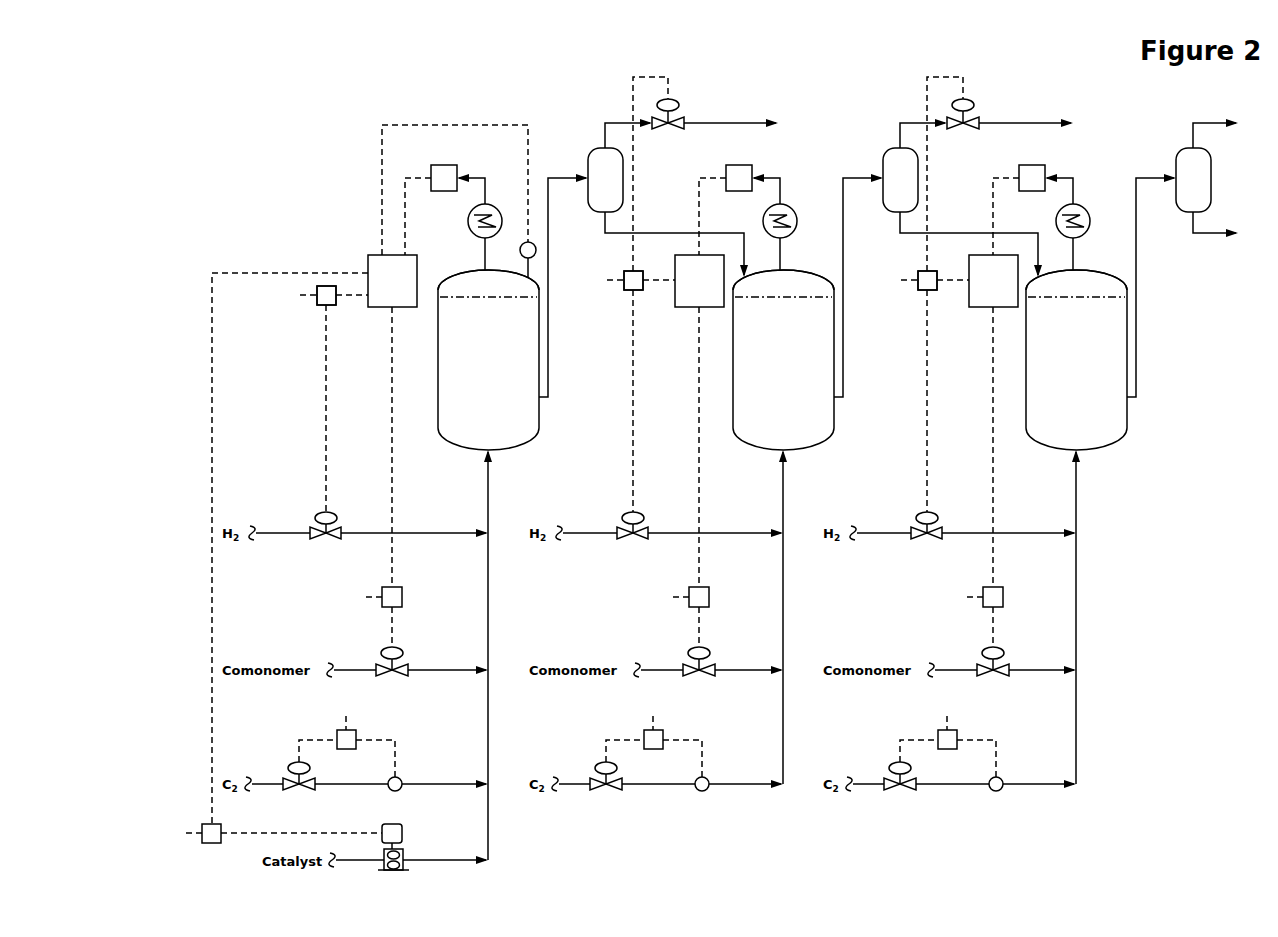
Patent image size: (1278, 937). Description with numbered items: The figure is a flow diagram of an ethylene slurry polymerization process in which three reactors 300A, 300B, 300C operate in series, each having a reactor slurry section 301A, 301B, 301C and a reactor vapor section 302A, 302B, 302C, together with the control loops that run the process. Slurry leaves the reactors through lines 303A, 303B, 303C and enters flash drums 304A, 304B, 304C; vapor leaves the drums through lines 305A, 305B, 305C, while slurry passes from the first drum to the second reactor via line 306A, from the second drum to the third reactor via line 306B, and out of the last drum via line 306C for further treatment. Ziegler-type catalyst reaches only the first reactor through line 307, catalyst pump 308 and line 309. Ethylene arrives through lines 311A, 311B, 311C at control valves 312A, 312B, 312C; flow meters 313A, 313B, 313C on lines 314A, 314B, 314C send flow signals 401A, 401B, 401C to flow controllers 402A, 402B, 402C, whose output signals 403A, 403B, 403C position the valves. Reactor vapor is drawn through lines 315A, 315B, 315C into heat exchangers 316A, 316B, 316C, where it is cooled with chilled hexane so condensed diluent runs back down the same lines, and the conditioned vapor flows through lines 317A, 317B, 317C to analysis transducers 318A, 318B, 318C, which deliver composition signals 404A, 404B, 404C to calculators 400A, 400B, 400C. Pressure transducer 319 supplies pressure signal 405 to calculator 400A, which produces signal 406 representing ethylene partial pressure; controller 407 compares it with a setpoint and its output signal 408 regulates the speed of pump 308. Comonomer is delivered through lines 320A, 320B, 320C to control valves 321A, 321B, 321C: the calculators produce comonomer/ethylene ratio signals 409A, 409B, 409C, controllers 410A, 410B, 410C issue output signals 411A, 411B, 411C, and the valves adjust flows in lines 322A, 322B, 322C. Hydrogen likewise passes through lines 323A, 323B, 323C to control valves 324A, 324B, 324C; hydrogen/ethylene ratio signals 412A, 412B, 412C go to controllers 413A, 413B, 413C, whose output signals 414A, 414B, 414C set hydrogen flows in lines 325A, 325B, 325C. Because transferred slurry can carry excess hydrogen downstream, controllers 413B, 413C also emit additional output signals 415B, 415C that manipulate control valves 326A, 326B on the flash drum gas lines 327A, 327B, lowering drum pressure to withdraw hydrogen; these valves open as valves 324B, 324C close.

The ethylene slurry polymerization reactor 300A is at (518, 447).
The ethylene slurry polymerization reactor 300B is at (813, 447).
The ethylene slurry polymerization reactor 300C is at (1106, 447).
The reactor slurry section 301A is at (488, 360).
The reactor slurry section 301B is at (783, 360).
The reactor slurry section 301C is at (1076, 360).
The reactor vapor section 302A is at (488, 283).
The reactor vapor section 302B is at (783, 283).
The reactor vapor section 302C is at (1076, 283).
The line 303A is at (563, 280).
The line 303B is at (858, 280).
The line 303C is at (1151, 280).
The flash drum 304A is at (605, 180).
The flash drum 304B is at (900, 180).
The flash drum 304C is at (1193, 180).
The line 305A is at (613, 133).
The line 305B is at (908, 133).
The line 305C is at (1215, 128).
The line 306A is at (676, 244).
The line 306B is at (971, 244).
The line 306C is at (1215, 231).
The line 307 is at (356, 866).
The catalyst pump 308 is at (393, 859).
The line 309 is at (445, 867).
The line 311A is at (266, 787).
The line 311B is at (572, 787).
The line 311C is at (866, 787).
The control valve 312A is at (301, 785).
The control valve 312B is at (608, 785).
The control valve 312C is at (902, 785).
The flow meter 313A is at (398, 777).
The flow meter 313B is at (705, 777).
The flow meter 313C is at (999, 777).
The line 314A is at (401, 789).
The line 314B is at (702, 789).
The line 314C is at (996, 789).
The line 315A is at (469, 254).
The line 315B is at (798, 254).
The line 315C is at (1090, 254).
The heat exchanger 316A is at (495, 217).
The heat exchanger 316B is at (795, 221).
The heat exchanger 316C is at (1088, 221).
The line 317A is at (480, 184).
The line 317B is at (783, 189).
The line 317C is at (1077, 189).
The analysis transducer 318A is at (446, 170).
The analysis transducer 318B is at (740, 170).
The analysis transducer 318C is at (1033, 170).
The pressure transducer 319 is at (516, 259).
The line 320A is at (351, 676).
The line 320B is at (658, 676).
The line 320C is at (952, 676).
The control valve 321A is at (393, 671).
The control valve 321B is at (699, 671).
The control valve 321C is at (993, 671).
The line 322A is at (448, 677).
The line 322B is at (749, 677).
The line 322C is at (1042, 677).
The line 323A is at (279, 538).
The line 323B is at (586, 538).
The line 323C is at (880, 538).
The control valve 324A is at (326, 535).
The control valve 324B is at (632, 535).
The control valve 324C is at (926, 535).
The line 325A is at (414, 540).
The line 325B is at (715, 540).
The line 325C is at (1009, 540).
The control valve 326A is at (668, 122).
The control valve 326B is at (963, 122).
The line 327A is at (731, 118).
The line 327B is at (1026, 118).
The calculator 400A is at (392, 281).
The calculator 400B is at (699, 281).
The calculator 400C is at (993, 281).
The flow signal 401A is at (377, 752).
The flow signal 401B is at (684, 752).
The flow signal 401C is at (978, 752).
The flow controller 402A is at (348, 735).
The flow controller 402B is at (654, 735).
The flow controller 402C is at (948, 735).
The output signal 403A is at (317, 744).
The output signal 403B is at (624, 744).
The output signal 403C is at (918, 744).
The signal 404A is at (422, 216).
The signal 404B is at (697, 216).
The signal 404C is at (990, 216).
The pressure signal 405 is at (455, 182).
The signal 406 is at (275, 548).
The controller 407 is at (194, 842).
The output signal 408 is at (301, 825).
The signal 409A is at (375, 447).
The signal 409B is at (682, 447).
The signal 409C is at (976, 447).
The controller 410A is at (393, 597).
The controller 410B is at (699, 597).
The controller 410C is at (993, 597).
The output signal 411A is at (375, 627).
The output signal 411B is at (682, 627).
The output signal 411C is at (976, 627).
The signal 412A is at (323, 298).
The signal 412B is at (630, 283).
The signal 412C is at (924, 283).
The controller 413A is at (317, 306).
The controller 413B is at (624, 291).
The controller 413C is at (918, 291).
The output signal 414A is at (309, 408).
The output signal 414B is at (616, 401).
The output signal 414C is at (910, 401).
The additional output signal 415B is at (633, 174).
The additional output signal 415C is at (928, 174).